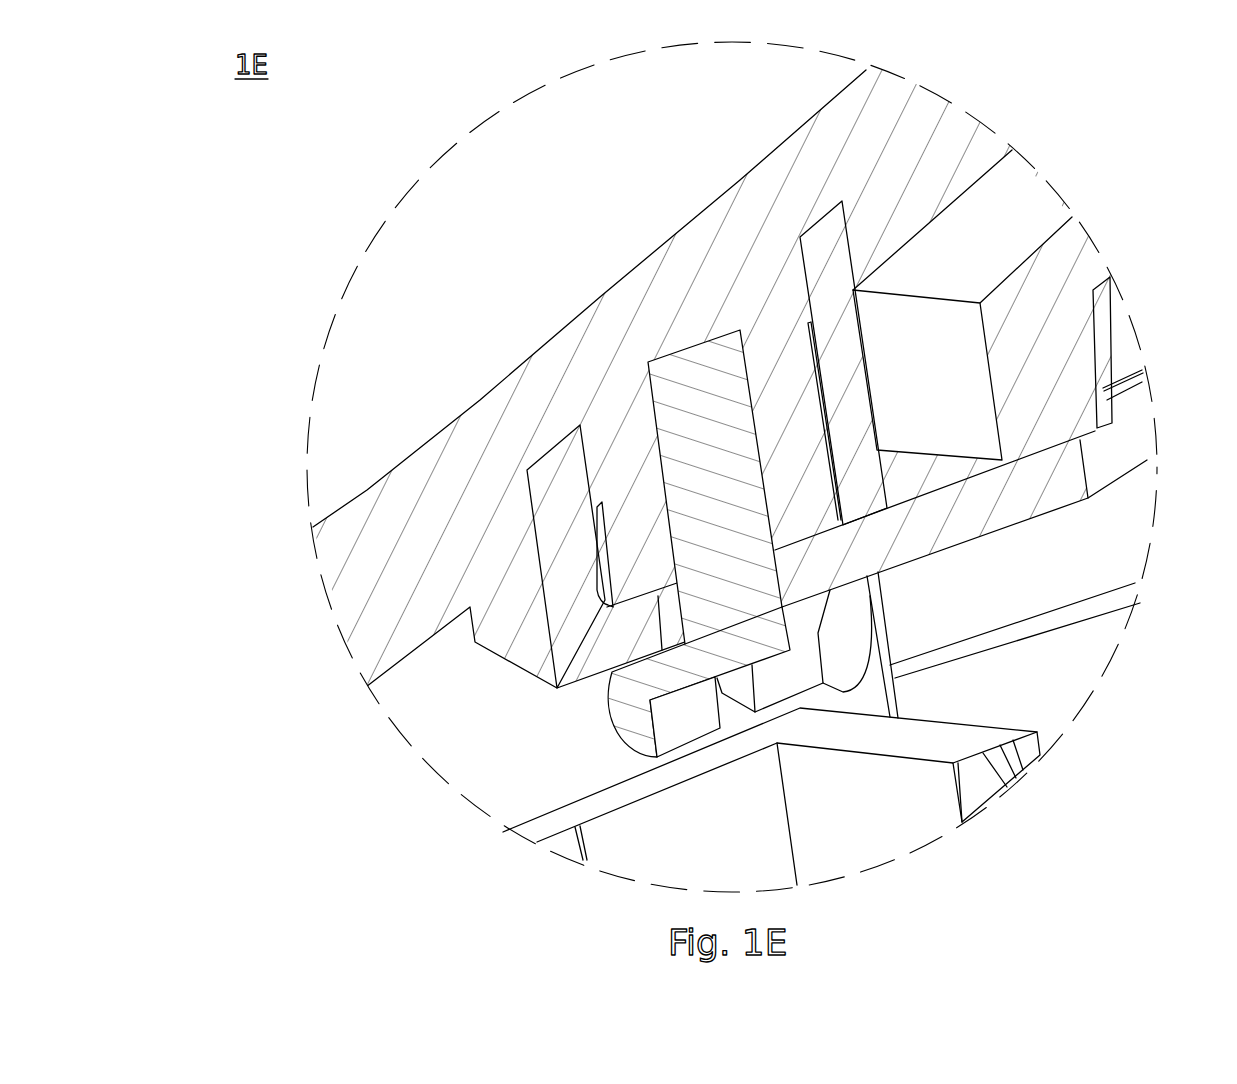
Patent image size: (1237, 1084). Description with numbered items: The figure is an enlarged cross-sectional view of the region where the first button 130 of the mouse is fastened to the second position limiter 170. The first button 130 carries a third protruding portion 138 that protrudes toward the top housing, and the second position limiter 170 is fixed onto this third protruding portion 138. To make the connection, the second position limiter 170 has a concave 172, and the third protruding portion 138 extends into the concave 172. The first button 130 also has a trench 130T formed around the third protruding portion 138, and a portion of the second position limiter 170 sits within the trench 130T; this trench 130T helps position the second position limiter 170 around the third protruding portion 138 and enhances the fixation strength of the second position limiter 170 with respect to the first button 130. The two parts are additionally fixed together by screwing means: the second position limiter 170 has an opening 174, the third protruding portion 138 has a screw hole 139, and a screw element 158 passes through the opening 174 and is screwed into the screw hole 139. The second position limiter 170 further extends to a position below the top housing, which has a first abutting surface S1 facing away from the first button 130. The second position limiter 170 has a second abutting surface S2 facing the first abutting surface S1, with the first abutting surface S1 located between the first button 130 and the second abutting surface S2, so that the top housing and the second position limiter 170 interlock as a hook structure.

The first button 130 is at (440, 507).
The trench 130T is at (848, 245).
The third protruding portion 138 is at (622, 482).
The screw hole 139 is at (650, 389).
The screw element 158 is at (633, 715).
The second position limiter 170 is at (573, 597).
The concave 172 is at (600, 564).
The opening 174 is at (658, 610).
The first abutting surface S1 is at (1103, 430).
The second abutting surface S2 is at (1047, 452).